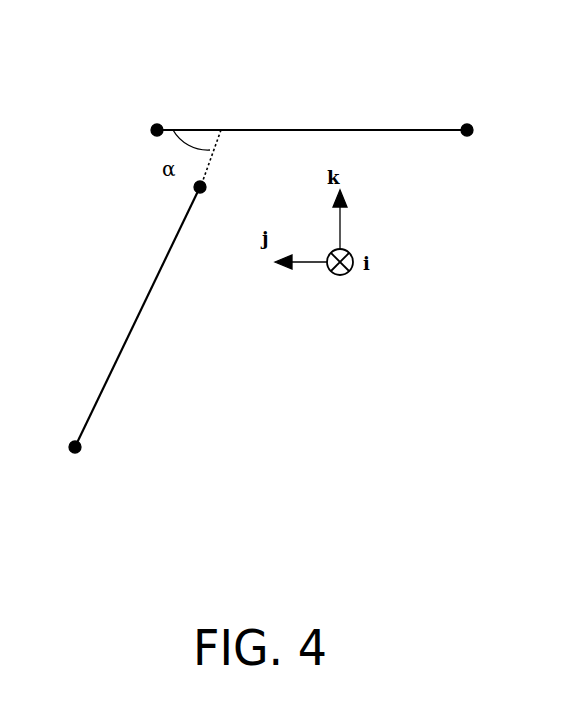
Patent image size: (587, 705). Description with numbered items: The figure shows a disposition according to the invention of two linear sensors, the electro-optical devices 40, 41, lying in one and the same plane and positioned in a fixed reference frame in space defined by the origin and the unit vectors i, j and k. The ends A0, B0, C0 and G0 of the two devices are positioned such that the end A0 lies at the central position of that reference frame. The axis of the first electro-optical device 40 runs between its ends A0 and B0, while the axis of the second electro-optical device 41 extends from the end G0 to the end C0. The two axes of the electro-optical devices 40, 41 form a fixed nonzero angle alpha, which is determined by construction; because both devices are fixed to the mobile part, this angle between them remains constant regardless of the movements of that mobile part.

The electro-optical device 40 is at (321, 96).
The electro-optical device 41 is at (126, 320).
The end of electro-optical device A0 is at (165, 115).
The end of electro-optical device B0 is at (476, 147).
The end of electro-optical device G0 is at (216, 189).
The end of electro-optical device C0 is at (89, 452).